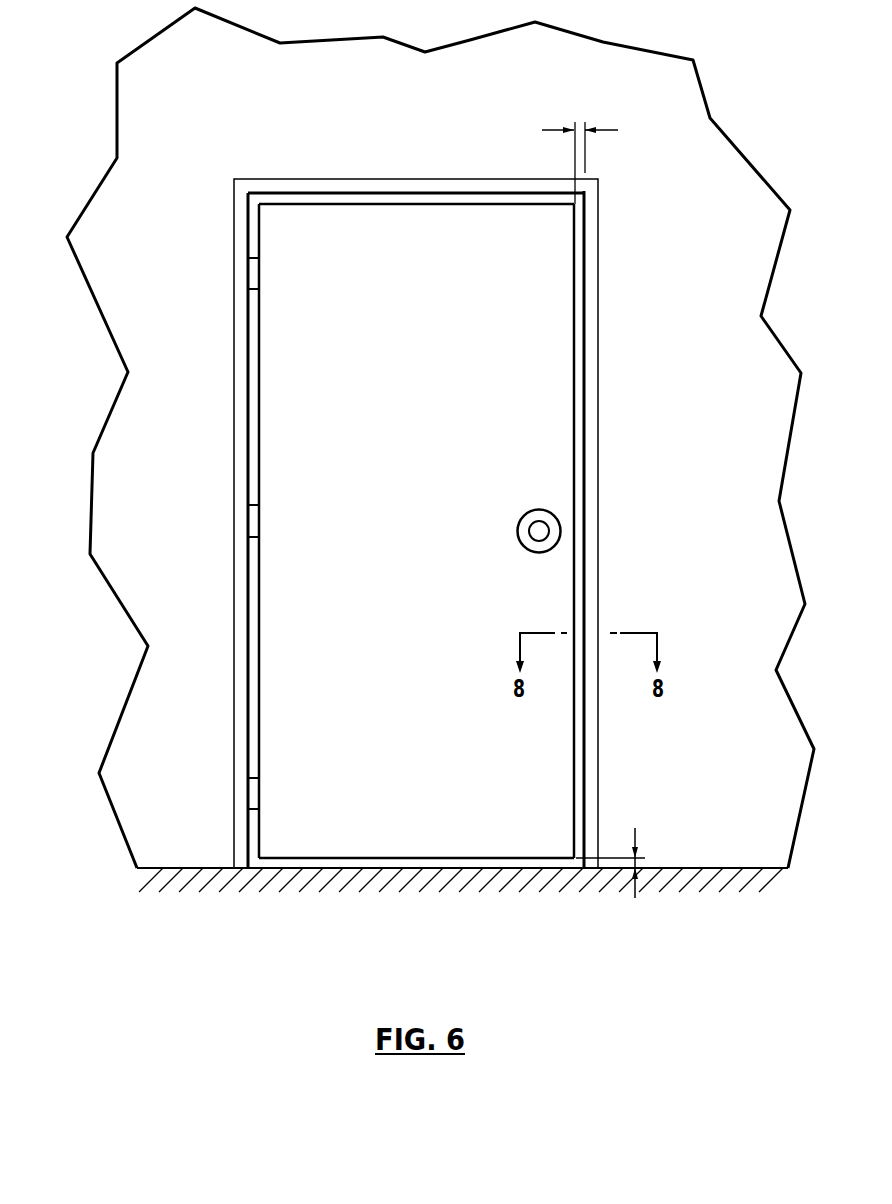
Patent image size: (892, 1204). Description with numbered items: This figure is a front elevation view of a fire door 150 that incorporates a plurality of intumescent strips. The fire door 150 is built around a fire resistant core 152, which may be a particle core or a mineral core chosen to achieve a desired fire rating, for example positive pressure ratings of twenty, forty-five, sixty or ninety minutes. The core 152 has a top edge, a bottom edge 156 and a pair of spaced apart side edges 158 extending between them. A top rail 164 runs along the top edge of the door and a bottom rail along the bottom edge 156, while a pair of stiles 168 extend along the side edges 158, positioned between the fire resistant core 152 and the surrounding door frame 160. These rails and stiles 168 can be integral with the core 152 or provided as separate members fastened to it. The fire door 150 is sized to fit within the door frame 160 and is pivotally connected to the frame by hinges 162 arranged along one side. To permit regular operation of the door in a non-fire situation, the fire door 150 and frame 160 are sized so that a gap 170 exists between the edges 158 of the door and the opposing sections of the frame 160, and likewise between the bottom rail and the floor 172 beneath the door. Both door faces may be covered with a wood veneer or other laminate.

The fire door 150 is at (203, 286).
The fire resistant core 152 is at (365, 544).
The bottom edge 156 is at (385, 860).
The side edges 158 is at (260, 453).
The door frame 160 is at (477, 468).
The hinges 162 is at (252, 270).
The top rail 164 is at (390, 205).
The stiles 168 is at (575, 392).
The gap 170 is at (618, 130).
The floor 172 is at (662, 868).